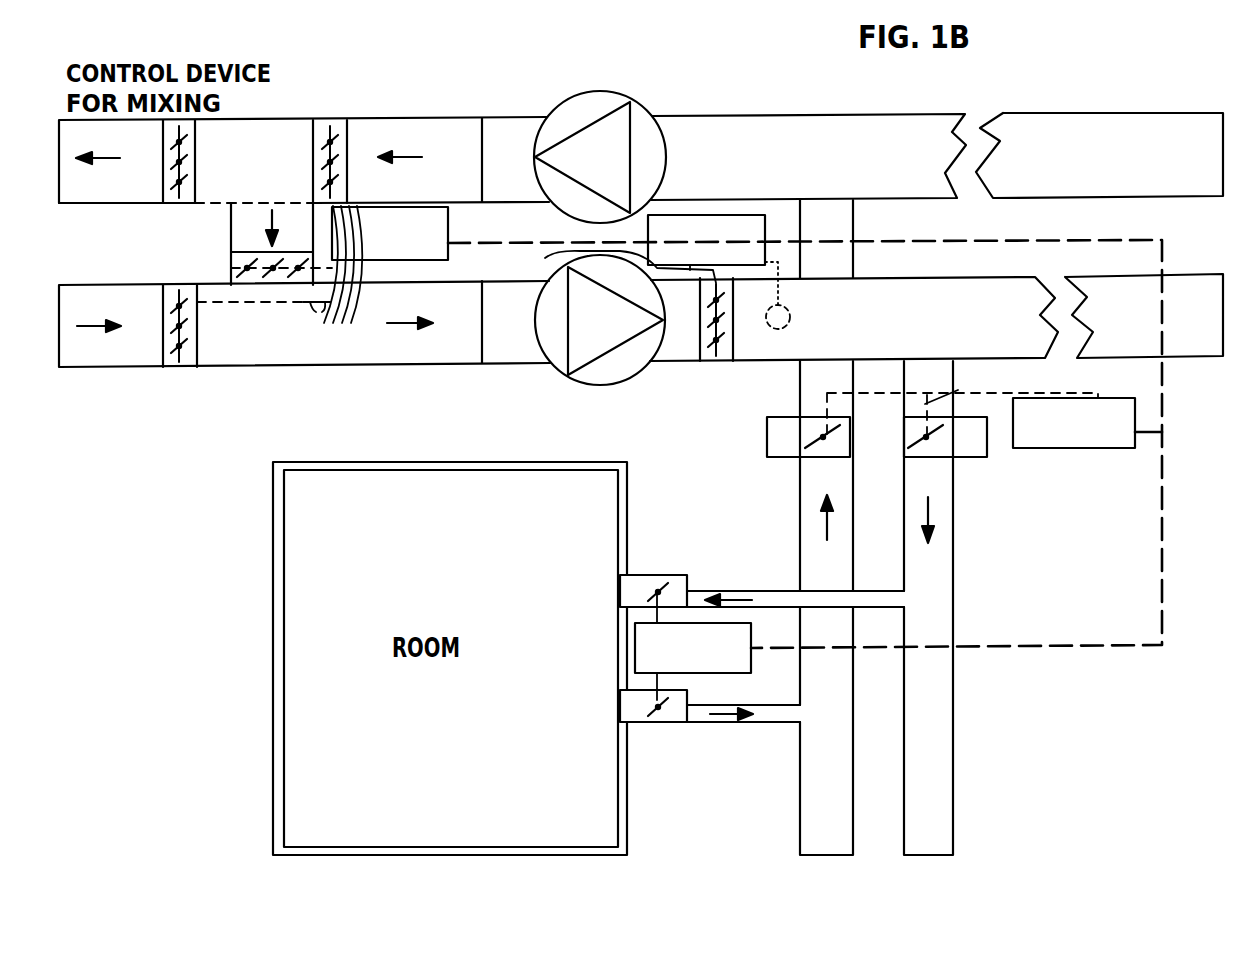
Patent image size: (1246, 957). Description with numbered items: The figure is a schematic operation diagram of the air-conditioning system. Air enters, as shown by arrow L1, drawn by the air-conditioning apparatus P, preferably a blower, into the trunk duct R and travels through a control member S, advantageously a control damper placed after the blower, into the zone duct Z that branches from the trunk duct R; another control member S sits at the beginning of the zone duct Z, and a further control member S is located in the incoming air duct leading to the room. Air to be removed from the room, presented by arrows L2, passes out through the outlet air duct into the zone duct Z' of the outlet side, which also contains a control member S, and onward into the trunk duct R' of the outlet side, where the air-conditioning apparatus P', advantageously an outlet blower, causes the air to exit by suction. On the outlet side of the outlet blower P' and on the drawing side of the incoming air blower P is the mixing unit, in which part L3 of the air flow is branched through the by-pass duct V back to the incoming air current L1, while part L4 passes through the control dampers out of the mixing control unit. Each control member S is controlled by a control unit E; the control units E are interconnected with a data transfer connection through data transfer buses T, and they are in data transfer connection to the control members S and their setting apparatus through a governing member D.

The control member S is at (319, 123).
The governing member D is at (1003, 393).
The control unit E is at (440, 252).
The data transfer bus T is at (492, 243).
The incoming air current L1 is at (90, 335).
The outlet air flow L2 is at (724, 740).
The by-passed part of air flow L3 is at (271, 214).
The exhausted part of air flow L4 is at (104, 158).
The air-conditioning apparatus P is at (600, 337).
The air-conditioning apparatus of the outlet side P' is at (600, 127).
The trunk duct R is at (641, 344).
The trunk duct of the outlet side R' is at (641, 127).
The zone duct Z is at (949, 608).
The zone duct of the outlet side Z' is at (798, 527).
The by-pass duct V is at (230, 242).